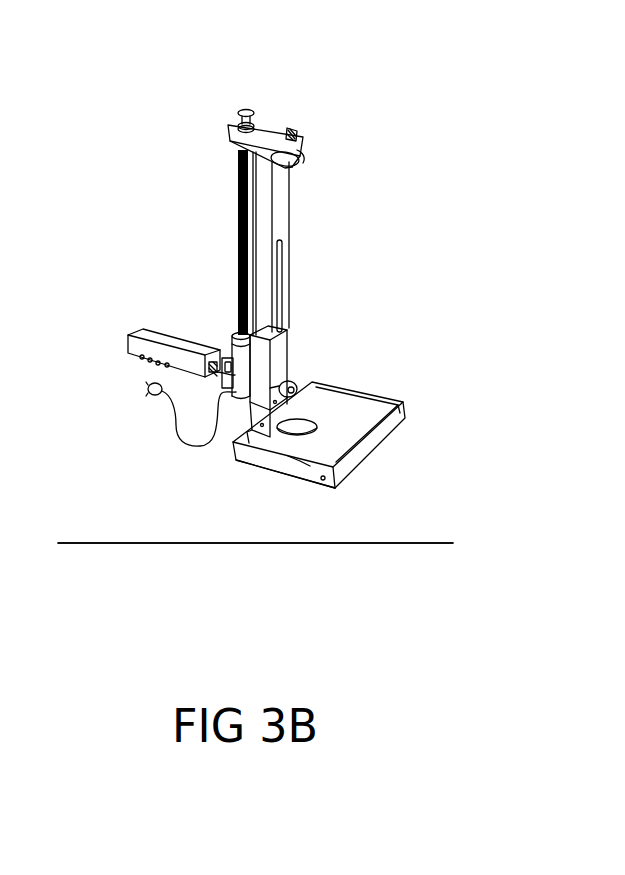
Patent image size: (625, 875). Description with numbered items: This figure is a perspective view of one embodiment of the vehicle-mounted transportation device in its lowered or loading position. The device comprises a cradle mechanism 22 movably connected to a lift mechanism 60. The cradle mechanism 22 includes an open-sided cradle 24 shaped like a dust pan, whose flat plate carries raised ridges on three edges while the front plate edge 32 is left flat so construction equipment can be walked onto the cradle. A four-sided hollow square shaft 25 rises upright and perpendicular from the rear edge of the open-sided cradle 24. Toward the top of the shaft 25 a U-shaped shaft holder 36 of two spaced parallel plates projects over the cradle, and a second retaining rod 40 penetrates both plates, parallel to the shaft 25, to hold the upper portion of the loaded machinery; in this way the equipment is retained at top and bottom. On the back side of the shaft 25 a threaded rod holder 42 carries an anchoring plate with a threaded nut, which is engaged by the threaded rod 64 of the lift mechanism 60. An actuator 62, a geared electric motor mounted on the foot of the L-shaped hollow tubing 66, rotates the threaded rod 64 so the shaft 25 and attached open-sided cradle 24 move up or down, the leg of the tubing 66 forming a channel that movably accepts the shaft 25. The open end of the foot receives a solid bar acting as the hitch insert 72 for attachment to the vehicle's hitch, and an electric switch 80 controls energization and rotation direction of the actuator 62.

The cradle mechanism 22 is at (293, 250).
The open-sided cradle 24 is at (285, 473).
The shaft 25 is at (281, 215).
The front plate edge 32 is at (383, 443).
The shaft holder 36 is at (272, 126).
The second retaining rod 40 is at (305, 152).
The threaded rod holder 42 is at (238, 122).
The lift mechanism 60 is at (293, 324).
The actuator 62 is at (227, 333).
The threaded rod 64 is at (237, 203).
The L-shaped hollow tubing 66 is at (280, 357).
The hitch insert 72 is at (147, 373).
The switch 80 is at (227, 343).